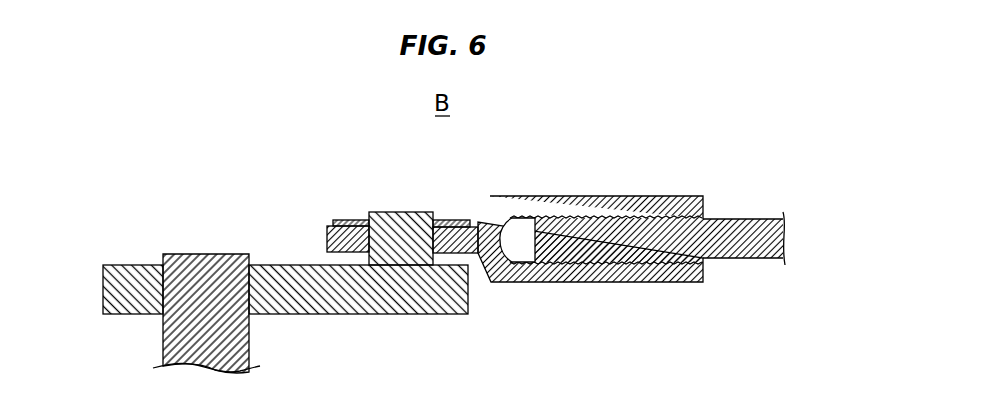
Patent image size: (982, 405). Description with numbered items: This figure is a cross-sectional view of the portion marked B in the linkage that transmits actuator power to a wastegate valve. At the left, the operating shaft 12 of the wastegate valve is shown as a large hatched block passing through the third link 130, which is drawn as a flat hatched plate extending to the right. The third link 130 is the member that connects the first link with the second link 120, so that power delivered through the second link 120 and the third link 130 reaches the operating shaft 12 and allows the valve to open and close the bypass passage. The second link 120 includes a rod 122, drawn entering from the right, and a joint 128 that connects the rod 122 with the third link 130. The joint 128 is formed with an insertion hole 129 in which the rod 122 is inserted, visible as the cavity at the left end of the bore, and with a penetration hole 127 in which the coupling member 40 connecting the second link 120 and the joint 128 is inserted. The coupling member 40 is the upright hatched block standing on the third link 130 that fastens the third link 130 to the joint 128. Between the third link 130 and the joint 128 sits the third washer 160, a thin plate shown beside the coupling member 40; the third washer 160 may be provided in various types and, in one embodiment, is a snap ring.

The operating shaft 12 is at (203, 262).
The coupling member 40 is at (397, 214).
The second link 120 is at (677, 188).
The rod 122 is at (738, 229).
The penetration hole 127 is at (444, 221).
The joint 128 is at (538, 212).
The insertion hole 129 is at (525, 238).
The third link 130 is at (130, 280).
The third washer 160 is at (350, 221).